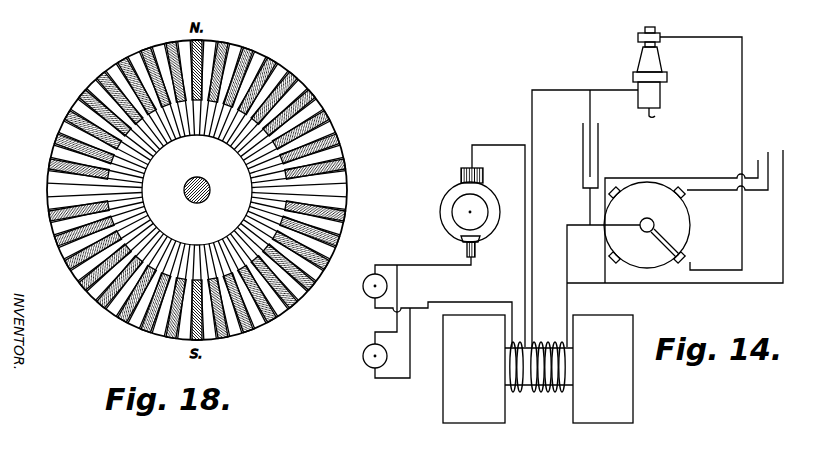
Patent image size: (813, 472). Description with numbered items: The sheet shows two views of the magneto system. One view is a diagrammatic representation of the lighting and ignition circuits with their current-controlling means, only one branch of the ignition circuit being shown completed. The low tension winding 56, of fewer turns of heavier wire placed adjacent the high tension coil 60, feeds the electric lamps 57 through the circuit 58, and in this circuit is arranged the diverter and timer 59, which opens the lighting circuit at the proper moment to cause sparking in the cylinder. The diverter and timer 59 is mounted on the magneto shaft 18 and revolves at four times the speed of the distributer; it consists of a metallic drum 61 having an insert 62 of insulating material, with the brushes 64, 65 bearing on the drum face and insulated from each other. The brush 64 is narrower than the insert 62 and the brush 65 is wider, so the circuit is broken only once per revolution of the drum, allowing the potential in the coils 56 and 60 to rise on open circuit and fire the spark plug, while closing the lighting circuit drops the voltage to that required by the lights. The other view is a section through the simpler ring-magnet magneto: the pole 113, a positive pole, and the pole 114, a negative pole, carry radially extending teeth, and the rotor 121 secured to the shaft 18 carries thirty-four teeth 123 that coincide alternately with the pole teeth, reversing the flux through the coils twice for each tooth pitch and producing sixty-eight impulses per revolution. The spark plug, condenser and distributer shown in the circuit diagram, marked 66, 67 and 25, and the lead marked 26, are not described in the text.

In FIG. 18, the magneto shaft 18 is at (211, 190).
In FIG. 18, the pole 113 is at (223, 53).
In FIG. 18, the pole 114 is at (183, 333).
In FIG. 18, the rotor 121 is at (335, 190).
In FIG. 18, the teeth 123 is at (98, 107).
In FIG. 14, the teeth 123 is at (763, 0).
In FIG. 14, the distributor 25 is at (651, 199).
In FIG. 14, the conductor 26 is at (745, 3).
In FIG. 14, the low tension winding 56 is at (512, 392).
In FIG. 14, the electric lamps 57 is at (363, 357).
In FIG. 14, the circuit 58 is at (483, 300).
In FIG. 14, the diverter and timer 59 is at (462, 204).
In FIG. 14, the coil 60 is at (545, 394).
In FIG. 14, the metallic drum 61 is at (485, 198).
In FIG. 14, the insert 62 is at (479, 240).
In FIG. 14, the brush 64 is at (466, 250).
In FIG. 14, the brush 65 is at (461, 176).
In FIG. 14, the spark plug 66 is at (661, 93).
In FIG. 14, the condenser 67 is at (584, 160).